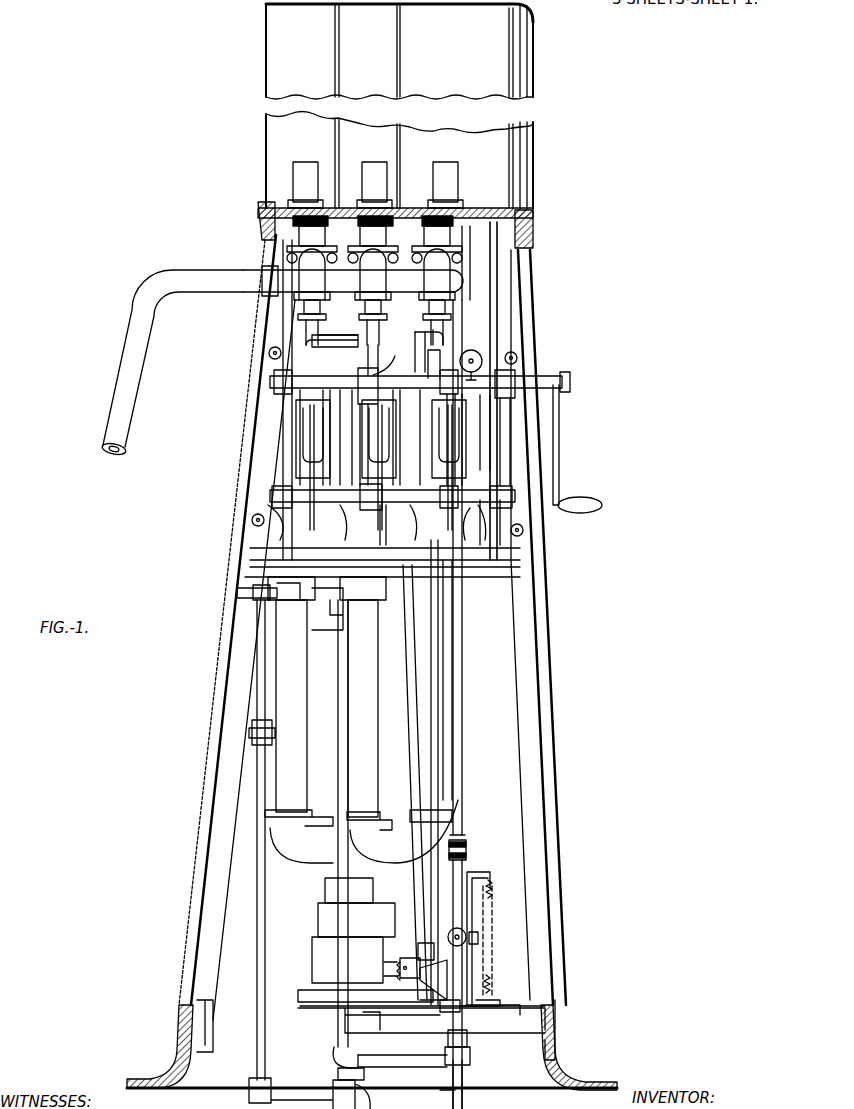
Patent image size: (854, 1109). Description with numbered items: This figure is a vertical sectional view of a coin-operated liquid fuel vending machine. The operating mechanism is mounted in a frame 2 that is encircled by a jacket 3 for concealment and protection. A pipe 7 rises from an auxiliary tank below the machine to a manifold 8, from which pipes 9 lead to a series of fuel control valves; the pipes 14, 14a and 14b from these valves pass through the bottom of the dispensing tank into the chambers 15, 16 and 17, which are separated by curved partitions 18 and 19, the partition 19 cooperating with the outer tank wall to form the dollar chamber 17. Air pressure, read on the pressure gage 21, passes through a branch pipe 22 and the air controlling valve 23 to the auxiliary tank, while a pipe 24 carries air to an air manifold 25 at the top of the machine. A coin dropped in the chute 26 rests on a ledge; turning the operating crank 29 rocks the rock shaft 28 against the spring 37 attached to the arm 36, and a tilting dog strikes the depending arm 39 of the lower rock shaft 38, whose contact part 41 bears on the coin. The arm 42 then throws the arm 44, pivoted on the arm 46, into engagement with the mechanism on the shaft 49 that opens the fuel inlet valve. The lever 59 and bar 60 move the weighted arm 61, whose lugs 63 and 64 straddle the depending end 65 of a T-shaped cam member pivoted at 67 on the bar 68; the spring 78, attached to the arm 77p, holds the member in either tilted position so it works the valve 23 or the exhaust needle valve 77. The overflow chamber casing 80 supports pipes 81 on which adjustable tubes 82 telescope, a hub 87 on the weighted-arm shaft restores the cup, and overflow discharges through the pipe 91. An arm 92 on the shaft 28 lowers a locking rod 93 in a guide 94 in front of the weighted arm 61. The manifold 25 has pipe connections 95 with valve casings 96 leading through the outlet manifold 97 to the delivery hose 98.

The frame 2 is at (525, 618).
The jacket 3 is at (546, 633).
The pipe 7 is at (262, 685).
The manifold 8 is at (327, 609).
The pipes 9 is at (258, 594).
The pipe 14 is at (497, 292).
The pipe 14a is at (405, 236).
The pipe 14b is at (350, 214).
The chamber 15 is at (485, 108).
The chamber 16 is at (583, 76).
The dollar chamber 17 is at (582, 118).
The curved partition 18 is at (398, 44).
The curved partition 19 is at (334, 44).
The pressure gage 21 is at (480, 353).
The branch pipe 22 is at (452, 882).
The air controlling valve 23 is at (449, 930).
The pipe 24 is at (337, 887).
The air manifold 25 is at (338, 344).
The chute 26 is at (452, 318).
The rock shaft 28 is at (545, 384).
The operating crank 29 is at (559, 452).
The upwardly projecting arm 36 is at (381, 344).
The spring 37 is at (400, 352).
The rock shaft 38 is at (492, 420).
The depending arm 39 is at (369, 370).
The contact part 41 is at (436, 451).
The arm 42 is at (377, 481).
The arm 44 is at (332, 556).
The arm 46 is at (310, 540).
The shaft 49 is at (482, 518).
The lever 59 is at (376, 530).
The bar 60 is at (410, 700).
The weighted arm 61 is at (427, 942).
The projecting lug 63 is at (445, 972).
The projecting lug 64 is at (446, 1012).
The depending end 65 is at (466, 1016).
The pivot 67 is at (480, 940).
The bar 68 is at (480, 917).
The needle valve 77 is at (488, 876).
The arm 77p is at (489, 1005).
The spring 78 is at (494, 889).
The overflow chamber casing 80 is at (322, 916).
The pipes 81 is at (479, 676).
The tubes 82 is at (456, 246).
The hub 87 is at (405, 962).
The pipe 91 is at (358, 1039).
The arm 92 is at (440, 358).
The rod 93 is at (438, 739).
The guide 94 is at (447, 830).
The pipe connections 95 is at (450, 216).
The valve casing 96 is at (374, 285).
The outlet manifold 97 is at (353, 281).
The delivery hose 98 is at (199, 290).